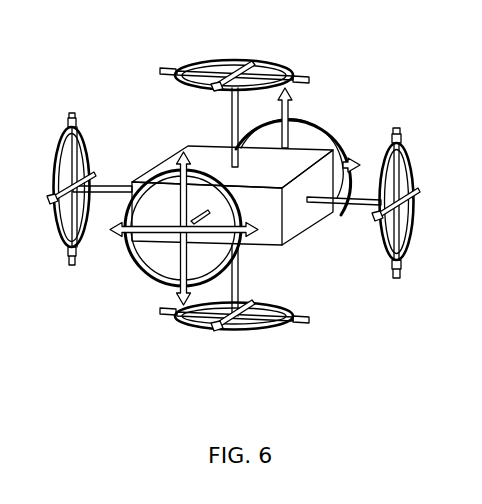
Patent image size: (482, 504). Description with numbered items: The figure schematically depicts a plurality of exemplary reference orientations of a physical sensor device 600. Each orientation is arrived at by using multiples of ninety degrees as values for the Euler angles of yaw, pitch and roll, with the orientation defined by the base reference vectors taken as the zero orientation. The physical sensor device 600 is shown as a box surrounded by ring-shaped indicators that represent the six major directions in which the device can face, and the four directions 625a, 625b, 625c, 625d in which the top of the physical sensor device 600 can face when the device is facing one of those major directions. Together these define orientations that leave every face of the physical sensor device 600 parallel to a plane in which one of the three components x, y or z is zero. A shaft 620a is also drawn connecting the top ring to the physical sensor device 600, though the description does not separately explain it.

The physical sensor device 600 is at (287, 234).
The support shaft 620a is at (232, 113).
The top-facing direction 625a is at (257, 61).
The top-facing direction 625b is at (309, 78).
The top-facing direction 625c is at (206, 89).
The top-facing direction 625d is at (171, 68).